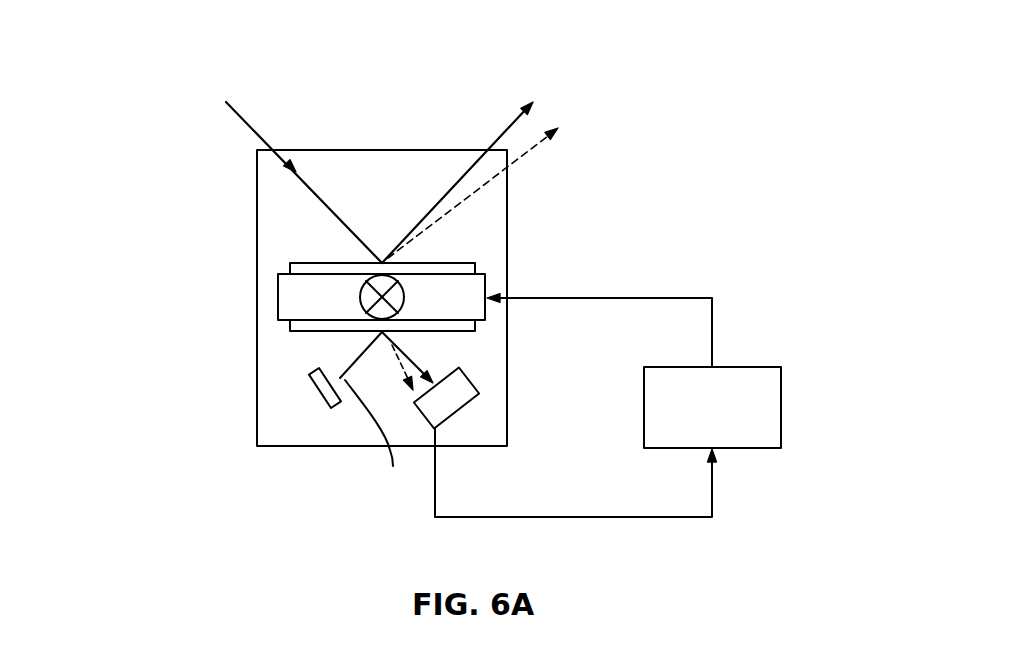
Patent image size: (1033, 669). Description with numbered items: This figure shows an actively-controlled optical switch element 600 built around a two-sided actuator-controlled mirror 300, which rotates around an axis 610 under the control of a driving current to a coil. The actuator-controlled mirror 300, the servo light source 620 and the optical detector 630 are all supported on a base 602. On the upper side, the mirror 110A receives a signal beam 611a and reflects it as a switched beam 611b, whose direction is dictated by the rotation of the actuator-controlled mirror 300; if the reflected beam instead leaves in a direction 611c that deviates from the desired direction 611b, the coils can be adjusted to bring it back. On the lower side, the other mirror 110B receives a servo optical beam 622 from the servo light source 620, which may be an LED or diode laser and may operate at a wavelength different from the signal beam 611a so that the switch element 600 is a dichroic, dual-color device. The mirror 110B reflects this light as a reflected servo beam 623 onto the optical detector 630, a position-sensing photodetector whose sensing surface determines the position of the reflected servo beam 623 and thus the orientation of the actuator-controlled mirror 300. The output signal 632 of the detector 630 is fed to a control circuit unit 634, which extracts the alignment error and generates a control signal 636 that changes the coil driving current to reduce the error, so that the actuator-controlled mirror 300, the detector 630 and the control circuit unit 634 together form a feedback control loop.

The actively-controlled optical switch element 600 is at (148, 53).
The base 602 is at (338, 452).
The actuator-controlled mirror 300 is at (268, 295).
The mirror 110A is at (477, 264).
The mirror 110B is at (478, 327).
The axis 610 is at (362, 298).
The signal beam 611a is at (250, 123).
The switched beam 611b is at (495, 137).
The deviated direction 611c is at (542, 140).
The servo light source 620 is at (313, 383).
The servo optical beam 622 is at (382, 439).
The reflected servo beam 623 is at (415, 363).
The optical detector 630 is at (465, 405).
The output signal 632 is at (572, 517).
The control circuit unit 634 is at (745, 367).
The control signal 636 is at (633, 298).